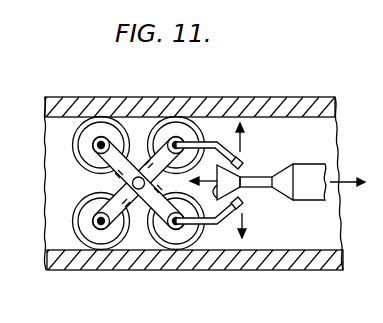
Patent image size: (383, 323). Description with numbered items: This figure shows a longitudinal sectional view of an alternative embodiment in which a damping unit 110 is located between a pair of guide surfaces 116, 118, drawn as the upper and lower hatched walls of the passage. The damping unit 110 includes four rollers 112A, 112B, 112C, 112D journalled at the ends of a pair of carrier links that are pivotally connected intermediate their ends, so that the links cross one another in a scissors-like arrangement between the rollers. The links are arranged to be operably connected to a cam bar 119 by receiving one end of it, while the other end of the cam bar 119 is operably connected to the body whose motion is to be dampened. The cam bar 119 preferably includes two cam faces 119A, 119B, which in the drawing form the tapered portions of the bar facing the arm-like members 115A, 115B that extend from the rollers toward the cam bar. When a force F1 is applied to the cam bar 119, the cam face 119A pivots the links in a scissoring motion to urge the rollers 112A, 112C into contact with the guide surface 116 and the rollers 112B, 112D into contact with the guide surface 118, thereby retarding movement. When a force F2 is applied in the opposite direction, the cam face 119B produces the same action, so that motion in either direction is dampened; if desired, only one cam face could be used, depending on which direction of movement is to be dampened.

The damping unit 110 is at (78, 194).
The roller 112A is at (163, 127).
The roller 112B is at (177, 234).
The roller 112C is at (100, 127).
The roller 112D is at (111, 238).
The upper actuating arm 115A is at (233, 155).
The lower actuating arm 115B is at (222, 222).
The guide surface 116 is at (297, 116).
The guide surface 118 is at (298, 251).
The cam bar 119 is at (313, 191).
The cam face 119A is at (247, 158).
The cam face 119B is at (284, 170).
The force F1 is at (350, 169).
The force F2 is at (243, 200).